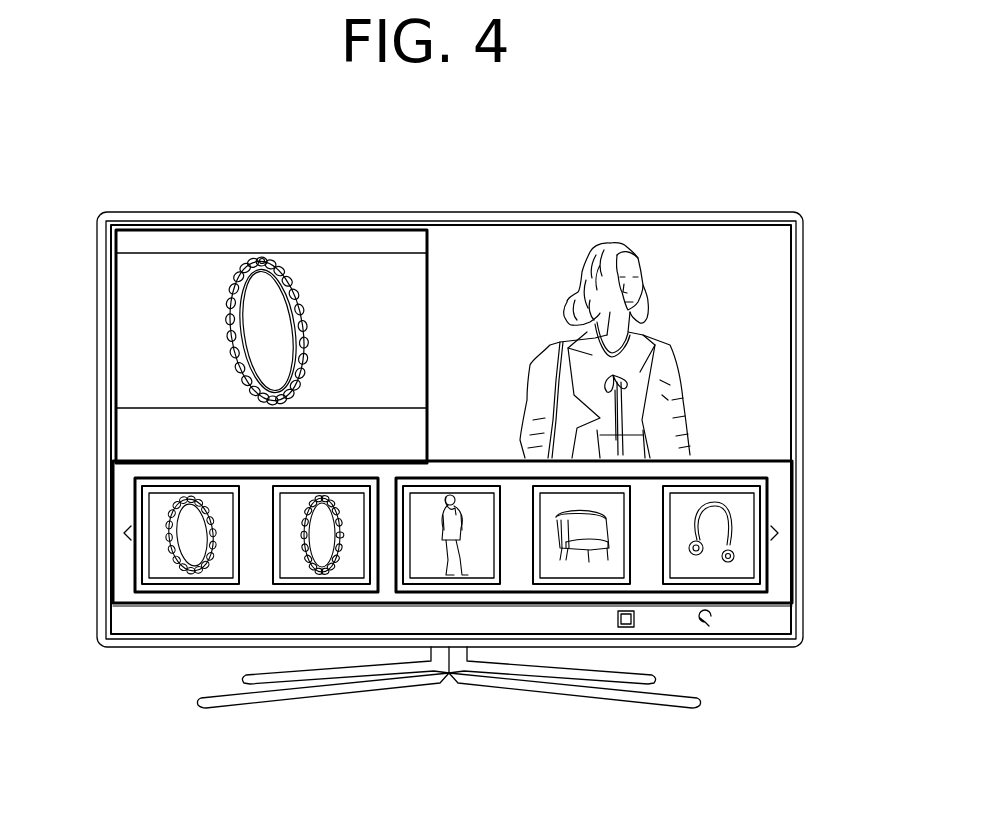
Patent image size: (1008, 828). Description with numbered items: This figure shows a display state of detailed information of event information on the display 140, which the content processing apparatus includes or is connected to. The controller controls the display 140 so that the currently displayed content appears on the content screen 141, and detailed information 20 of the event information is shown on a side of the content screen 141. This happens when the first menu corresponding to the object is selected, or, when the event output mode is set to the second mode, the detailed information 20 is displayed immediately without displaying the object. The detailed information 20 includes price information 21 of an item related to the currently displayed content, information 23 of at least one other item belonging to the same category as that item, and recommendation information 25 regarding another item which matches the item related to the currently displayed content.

The display 140 is at (738, 212).
The content screen 141 is at (660, 226).
The price information 21 is at (117, 342).
The detailed information 20 is at (772, 460).
The information of at least one another item 23 is at (263, 592).
The recommendation information 25 is at (520, 592).